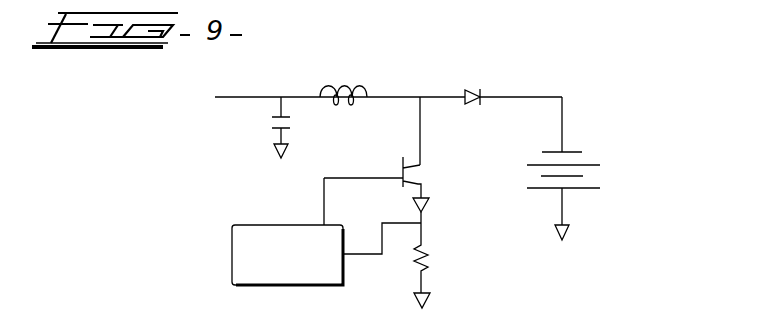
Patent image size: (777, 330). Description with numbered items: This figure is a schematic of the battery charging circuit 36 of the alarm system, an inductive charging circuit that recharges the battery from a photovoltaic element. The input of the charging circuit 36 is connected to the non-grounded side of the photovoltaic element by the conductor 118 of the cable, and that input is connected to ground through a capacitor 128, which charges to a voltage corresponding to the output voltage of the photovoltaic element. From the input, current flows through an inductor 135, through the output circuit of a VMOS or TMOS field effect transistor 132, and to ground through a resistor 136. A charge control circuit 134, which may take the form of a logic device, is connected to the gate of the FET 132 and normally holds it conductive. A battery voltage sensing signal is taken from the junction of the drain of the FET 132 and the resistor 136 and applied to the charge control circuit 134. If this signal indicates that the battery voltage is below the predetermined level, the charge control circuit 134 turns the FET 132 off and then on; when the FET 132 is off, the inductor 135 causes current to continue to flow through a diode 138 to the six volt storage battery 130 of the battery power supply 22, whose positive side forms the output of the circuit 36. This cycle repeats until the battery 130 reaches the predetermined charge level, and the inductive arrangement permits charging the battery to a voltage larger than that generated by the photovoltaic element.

The conductor 118 is at (247, 97).
The capacitor 128 is at (277, 128).
The inductor 135 is at (334, 88).
The diode 138 is at (472, 88).
The battery charging circuit 36 is at (510, 45).
The battery power supply 22 is at (576, 142).
The storage battery 130 is at (580, 190).
The field effect transistor 132 is at (401, 165).
The charge control circuit 134 is at (261, 224).
The resistor 136 is at (423, 252).